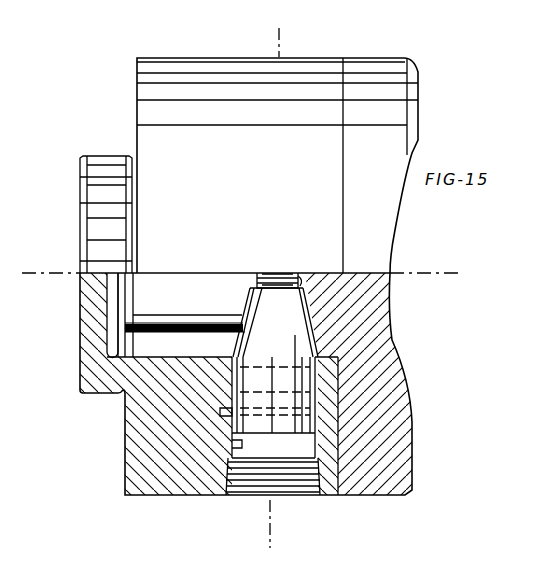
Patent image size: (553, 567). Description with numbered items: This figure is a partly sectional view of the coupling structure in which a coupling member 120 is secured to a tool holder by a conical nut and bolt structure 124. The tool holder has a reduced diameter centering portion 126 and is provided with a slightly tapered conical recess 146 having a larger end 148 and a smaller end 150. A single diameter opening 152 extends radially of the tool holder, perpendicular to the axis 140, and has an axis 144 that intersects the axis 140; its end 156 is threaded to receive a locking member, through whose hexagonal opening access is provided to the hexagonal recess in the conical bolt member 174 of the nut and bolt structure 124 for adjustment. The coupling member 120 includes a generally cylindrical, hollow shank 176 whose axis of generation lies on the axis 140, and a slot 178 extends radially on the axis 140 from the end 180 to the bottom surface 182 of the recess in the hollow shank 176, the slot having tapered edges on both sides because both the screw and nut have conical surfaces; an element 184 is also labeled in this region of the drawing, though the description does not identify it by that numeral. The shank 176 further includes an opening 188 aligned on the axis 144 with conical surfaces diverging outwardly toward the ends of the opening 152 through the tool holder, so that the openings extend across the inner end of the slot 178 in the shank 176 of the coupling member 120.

The coupling member 120 is at (364, 60).
The reduced diameter centering portion 126 is at (98, 158).
The axis 140 is at (430, 272).
The axis 144 is at (268, 529).
The end 180 is at (110, 342).
The larger end 148 is at (141, 312).
The spacer band 184 is at (196, 303).
The tapered recess 146 is at (180, 356).
The slot 178 is at (160, 352).
The hollow shank 176 is at (146, 360).
The conical nut and bolt structure 124 is at (268, 275).
The conical bolt member 174 is at (256, 274).
The bottom surface 182 is at (300, 284).
The opening 188 is at (245, 341).
The smaller end 150 is at (330, 354).
The single diameter opening 152 is at (232, 445).
The end 156 is at (305, 488).